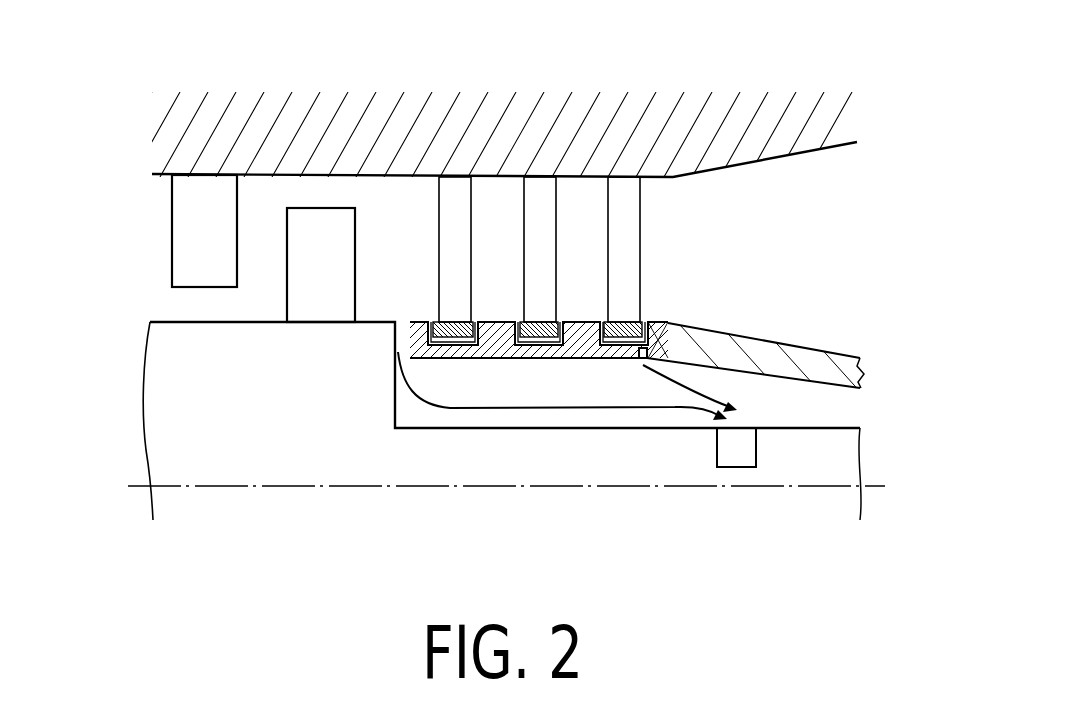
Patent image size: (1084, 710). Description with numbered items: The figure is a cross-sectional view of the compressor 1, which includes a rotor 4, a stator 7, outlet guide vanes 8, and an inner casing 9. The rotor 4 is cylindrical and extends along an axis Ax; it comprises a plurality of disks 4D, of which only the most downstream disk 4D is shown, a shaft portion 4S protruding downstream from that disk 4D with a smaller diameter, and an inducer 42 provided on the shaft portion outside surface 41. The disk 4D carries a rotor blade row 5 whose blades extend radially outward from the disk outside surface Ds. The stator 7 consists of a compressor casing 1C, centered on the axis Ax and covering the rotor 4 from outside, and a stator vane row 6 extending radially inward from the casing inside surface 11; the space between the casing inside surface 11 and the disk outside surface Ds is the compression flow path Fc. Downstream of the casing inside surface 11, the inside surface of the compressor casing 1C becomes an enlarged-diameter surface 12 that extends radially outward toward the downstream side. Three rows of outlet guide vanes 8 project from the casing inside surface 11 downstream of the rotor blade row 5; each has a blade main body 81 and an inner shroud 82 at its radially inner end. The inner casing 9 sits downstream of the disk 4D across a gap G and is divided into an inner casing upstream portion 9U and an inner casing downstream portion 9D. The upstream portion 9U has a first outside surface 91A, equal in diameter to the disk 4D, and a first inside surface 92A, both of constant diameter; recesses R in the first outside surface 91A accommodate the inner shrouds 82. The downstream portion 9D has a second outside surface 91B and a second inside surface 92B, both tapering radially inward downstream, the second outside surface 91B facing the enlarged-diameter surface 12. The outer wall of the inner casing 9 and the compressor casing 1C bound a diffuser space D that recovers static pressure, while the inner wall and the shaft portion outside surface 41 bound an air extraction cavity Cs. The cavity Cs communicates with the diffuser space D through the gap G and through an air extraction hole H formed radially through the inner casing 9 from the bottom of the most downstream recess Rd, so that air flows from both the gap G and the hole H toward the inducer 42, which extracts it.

The compressor 1 is at (95, 81).
The stator 7 is at (108, 173).
The compressor casing 1C is at (728, 118).
The diffuser space D is at (775, 150).
The enlarged-diameter surface 12 is at (826, 148).
The casing inside surface 11 is at (253, 177).
The stator vane row 6 is at (172, 232).
The compression flow path Fc is at (248, 263).
The rotor blade row 5 is at (322, 222).
The rotor 4 is at (165, 395).
The disk outside surface Ds is at (187, 322).
The disk 4D is at (275, 392).
The shaft portion outside surface 41 is at (413, 428).
The shaft portion 4S is at (495, 465).
The inducer 42 is at (745, 458).
The air extraction cavity Cs is at (797, 413).
The axis Ax is at (487, 489).
The outlet guide vane 8 is at (502, 206).
The blade main body 81 is at (443, 217).
The inner shroud 82 is at (440, 332).
The gap G is at (400, 308).
The inner casing 9 is at (670, 383).
The first outside surface 91A is at (577, 322).
The first inside surface 92A is at (546, 360).
The recess R is at (480, 318).
The air extraction hole H is at (641, 360).
The second outside surface 91B is at (757, 330).
The second inside surface 92B is at (817, 388).
The most downstream recess Rd is at (657, 322).
The inner casing downstream portion 9D is at (806, 337).
The inner casing upstream portion 9U is at (447, 366).